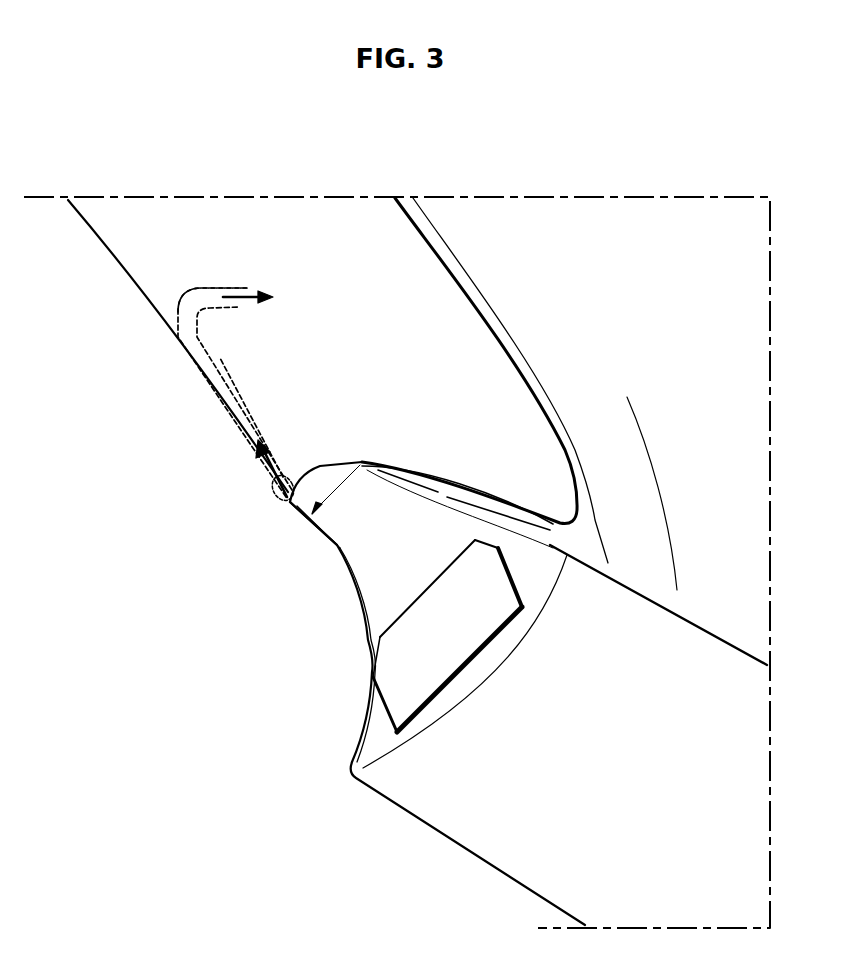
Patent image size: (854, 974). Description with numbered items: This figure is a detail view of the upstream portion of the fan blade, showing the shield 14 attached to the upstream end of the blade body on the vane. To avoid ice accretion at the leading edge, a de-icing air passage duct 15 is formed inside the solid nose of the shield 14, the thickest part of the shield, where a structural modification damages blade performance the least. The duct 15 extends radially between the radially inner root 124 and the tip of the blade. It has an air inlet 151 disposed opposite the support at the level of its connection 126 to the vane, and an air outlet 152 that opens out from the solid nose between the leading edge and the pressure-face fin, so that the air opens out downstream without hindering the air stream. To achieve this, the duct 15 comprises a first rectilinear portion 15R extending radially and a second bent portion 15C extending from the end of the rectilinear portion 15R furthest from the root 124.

The shield 14 is at (364, 340).
The de-icing air passage duct 15 is at (233, 401).
The second bent portion 15C is at (172, 303).
The first rectilinear portion 15R is at (257, 392).
The air inlet 151 is at (282, 502).
The air outlet 152 is at (247, 288).
The connection 126 is at (337, 488).
The radially inner root 124 is at (598, 788).